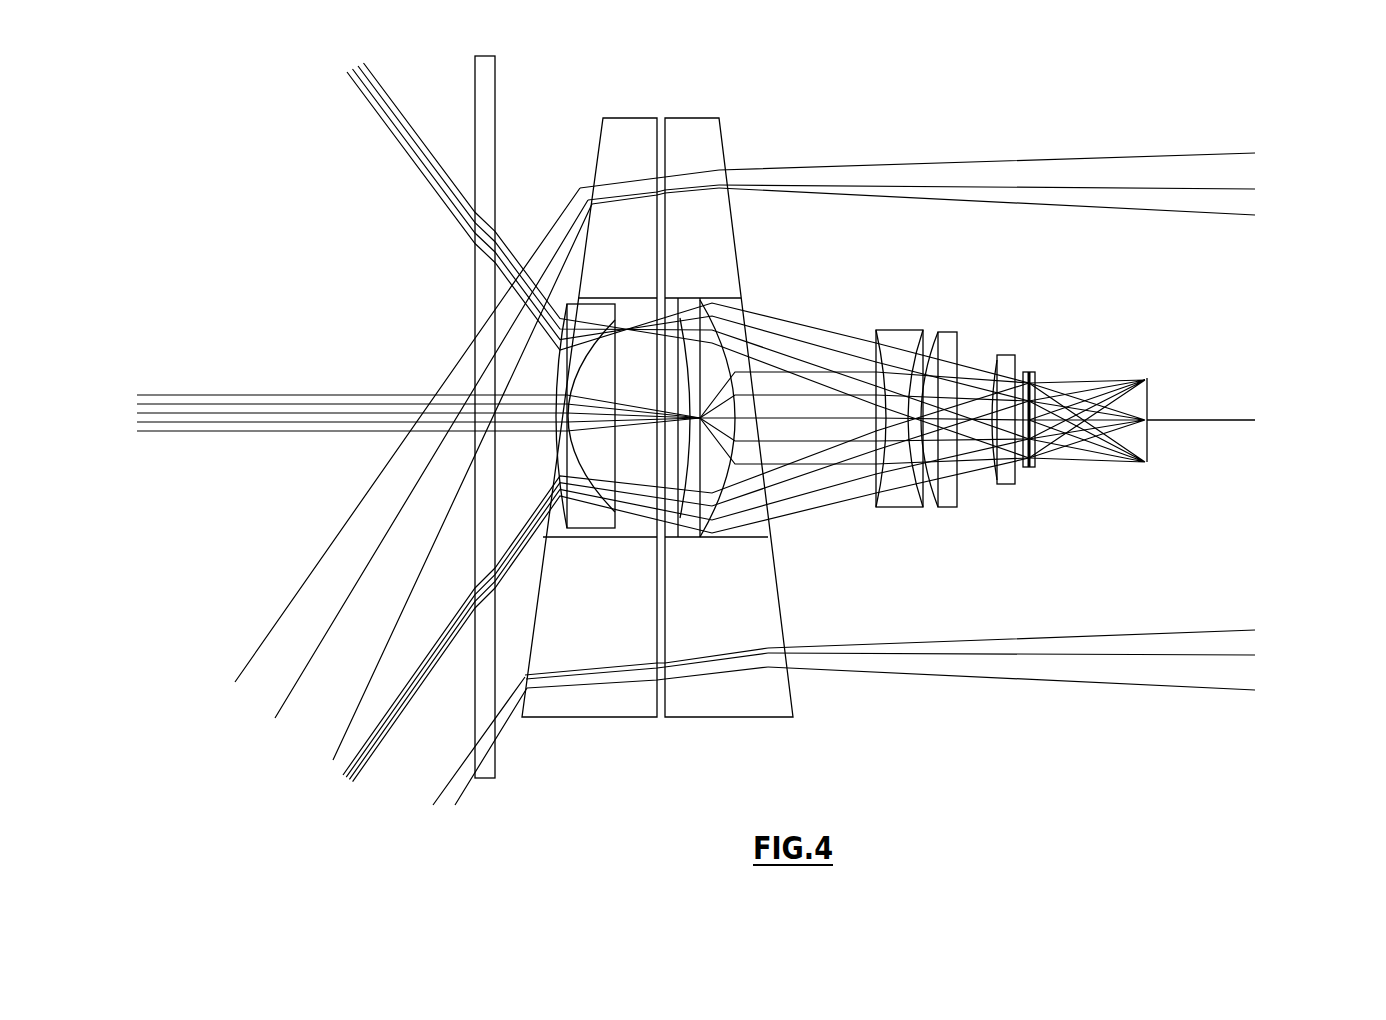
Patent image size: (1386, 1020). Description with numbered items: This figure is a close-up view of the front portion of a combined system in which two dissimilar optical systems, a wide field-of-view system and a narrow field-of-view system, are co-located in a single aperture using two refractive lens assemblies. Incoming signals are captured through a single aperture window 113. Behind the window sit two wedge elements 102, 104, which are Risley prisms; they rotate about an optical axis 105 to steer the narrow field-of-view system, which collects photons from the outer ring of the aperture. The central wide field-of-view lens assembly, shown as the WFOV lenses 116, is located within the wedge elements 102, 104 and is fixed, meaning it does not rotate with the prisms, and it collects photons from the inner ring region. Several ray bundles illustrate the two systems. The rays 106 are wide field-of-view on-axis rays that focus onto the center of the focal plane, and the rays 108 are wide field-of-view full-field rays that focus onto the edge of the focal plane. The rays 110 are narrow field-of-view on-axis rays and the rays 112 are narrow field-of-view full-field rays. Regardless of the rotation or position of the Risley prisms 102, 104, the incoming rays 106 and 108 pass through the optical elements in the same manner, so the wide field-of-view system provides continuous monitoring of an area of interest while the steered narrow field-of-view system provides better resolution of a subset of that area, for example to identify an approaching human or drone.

The wedge element 102 is at (568, 634).
The wedge element 104 is at (693, 634).
The optical axis 105 is at (1283, 413).
The WFOV on-axis rays 106 is at (232, 400).
The WFOV full-field rays 108 is at (370, 117).
The NFOV on-axis rays 110 is at (265, 728).
The NFOV full-field rays 112 is at (1265, 157).
The single aperture window 113 is at (507, 90).
The WFOV lenses 116 is at (1030, 325).